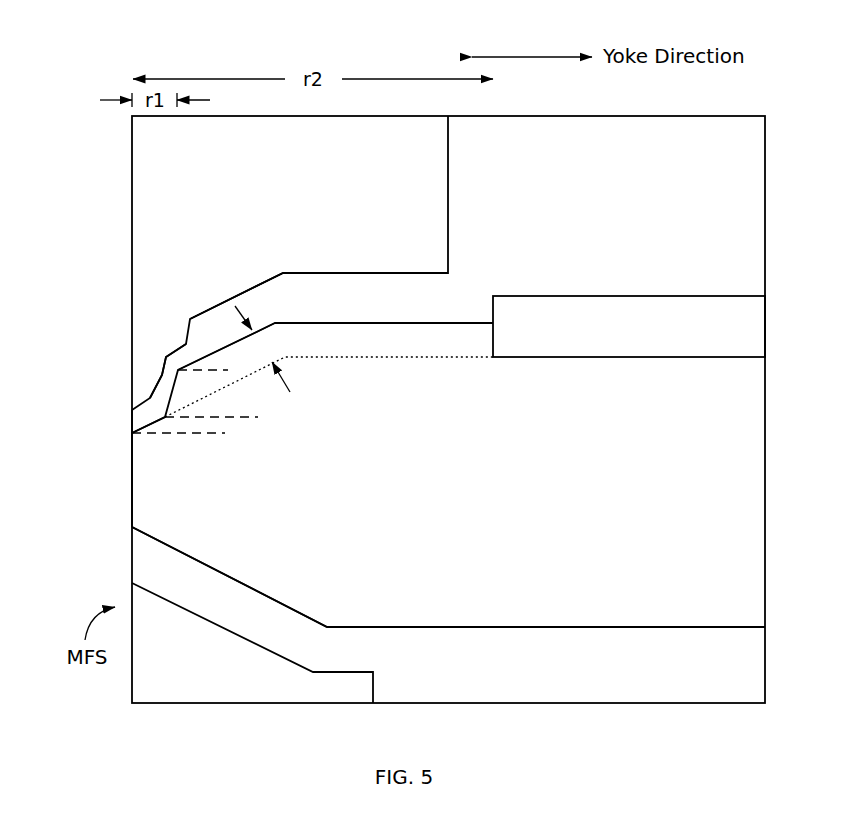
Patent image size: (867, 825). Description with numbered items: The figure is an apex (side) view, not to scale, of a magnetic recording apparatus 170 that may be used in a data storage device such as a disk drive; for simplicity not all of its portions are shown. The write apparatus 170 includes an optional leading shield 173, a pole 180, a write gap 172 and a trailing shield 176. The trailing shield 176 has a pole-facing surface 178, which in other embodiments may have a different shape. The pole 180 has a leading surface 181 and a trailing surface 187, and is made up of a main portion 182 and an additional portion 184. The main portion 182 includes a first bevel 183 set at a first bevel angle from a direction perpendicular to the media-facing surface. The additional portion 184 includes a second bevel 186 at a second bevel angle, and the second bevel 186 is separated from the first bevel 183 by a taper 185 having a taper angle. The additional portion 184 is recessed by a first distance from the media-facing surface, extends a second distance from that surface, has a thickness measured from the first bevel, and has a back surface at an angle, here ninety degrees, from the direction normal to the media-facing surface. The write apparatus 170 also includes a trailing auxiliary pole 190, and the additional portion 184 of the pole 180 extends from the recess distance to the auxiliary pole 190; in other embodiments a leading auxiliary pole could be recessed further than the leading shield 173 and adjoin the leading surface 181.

The magnetic recording apparatus 170 is at (385, 37).
The write gap 172 is at (132, 418).
The leading shield 173 is at (448, 615).
The trailing shield 176 is at (290, 263).
The pole-facing surface 178 is at (283, 250).
The pole 180 is at (115, 462).
The leading surface 181 is at (152, 550).
The main portion 182 is at (344, 396).
The first bevel 183 is at (157, 428).
The additional portion 184 is at (384, 338).
The taper 185 is at (157, 386).
The second bevel 186 is at (208, 340).
The trailing surface 187 is at (283, 310).
The auxiliary pole 190 is at (629, 326).